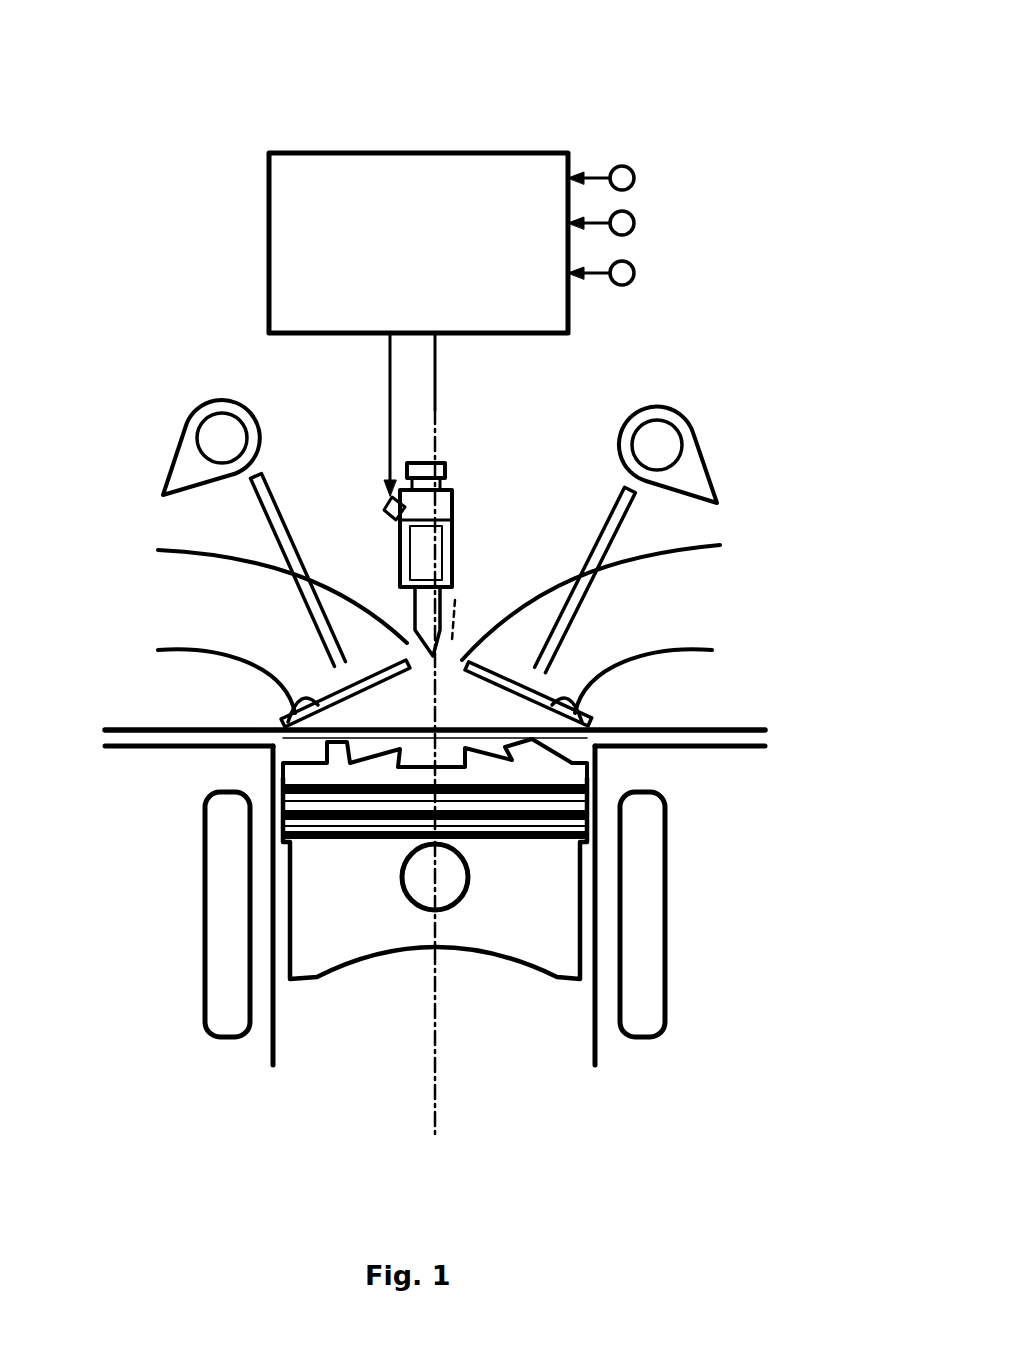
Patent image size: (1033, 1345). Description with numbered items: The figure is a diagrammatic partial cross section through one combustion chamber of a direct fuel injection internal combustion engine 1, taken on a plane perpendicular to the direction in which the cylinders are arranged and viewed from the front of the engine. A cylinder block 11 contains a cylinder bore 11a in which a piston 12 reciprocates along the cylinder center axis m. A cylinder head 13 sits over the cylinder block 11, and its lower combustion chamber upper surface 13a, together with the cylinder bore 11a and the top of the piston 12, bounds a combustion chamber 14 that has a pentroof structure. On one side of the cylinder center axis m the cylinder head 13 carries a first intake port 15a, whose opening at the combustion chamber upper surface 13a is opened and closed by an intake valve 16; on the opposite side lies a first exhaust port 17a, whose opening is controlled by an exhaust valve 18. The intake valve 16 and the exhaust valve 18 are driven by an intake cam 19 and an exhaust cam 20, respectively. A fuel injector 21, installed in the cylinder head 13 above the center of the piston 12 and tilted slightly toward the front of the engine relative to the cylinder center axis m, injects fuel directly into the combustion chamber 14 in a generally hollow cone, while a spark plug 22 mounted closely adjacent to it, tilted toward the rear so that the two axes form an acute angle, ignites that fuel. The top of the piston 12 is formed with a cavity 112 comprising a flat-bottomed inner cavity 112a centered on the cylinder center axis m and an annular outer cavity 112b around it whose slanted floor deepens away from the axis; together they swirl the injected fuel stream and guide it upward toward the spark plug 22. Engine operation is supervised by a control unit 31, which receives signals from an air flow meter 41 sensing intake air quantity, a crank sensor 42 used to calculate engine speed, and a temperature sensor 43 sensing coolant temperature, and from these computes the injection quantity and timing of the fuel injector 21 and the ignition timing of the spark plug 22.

The direct fuel injection internal combustion engine 1 is at (779, 114).
The control unit 31 is at (302, 153).
The air flow meter 41 is at (635, 178).
The crank sensor 42 is at (635, 223).
The temperature sensor 43 is at (635, 273).
The intake cam 19 is at (200, 414).
The exhaust cam 20 is at (680, 410).
The cylinder head 13 is at (346, 490).
The fuel injector 21 is at (452, 525).
The spark plug 22 is at (455, 600).
The combustion chamber upper surface 13a is at (466, 672).
The first intake port 15a is at (225, 655).
The first exhaust port 17a is at (645, 652).
The intake valve 16 is at (287, 716).
The exhaust valve 18 is at (587, 688).
The combustion chamber 14 is at (416, 697).
The cylinder block 11 is at (741, 931).
The cylinder bore 11a is at (277, 1013).
The piston 12 is at (512, 962).
The cavity 112 is at (540, 740).
The outer cavity 112b is at (565, 778).
The inner cavity 112a is at (583, 818).
The cylinder center axis m is at (443, 1103).